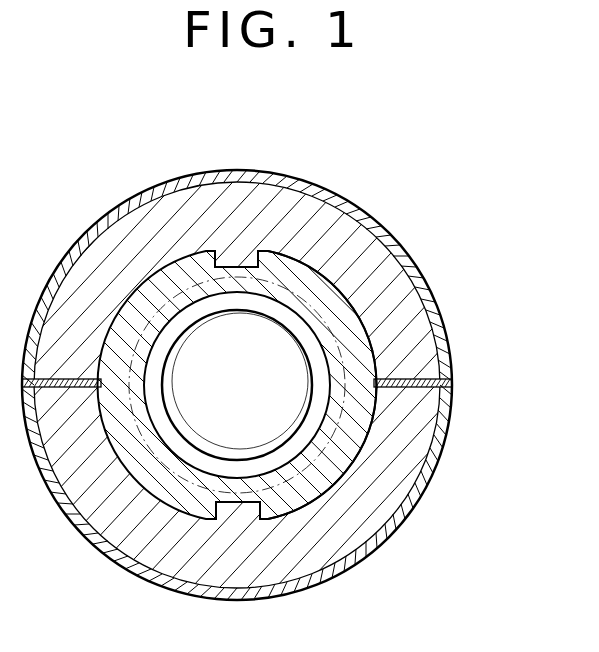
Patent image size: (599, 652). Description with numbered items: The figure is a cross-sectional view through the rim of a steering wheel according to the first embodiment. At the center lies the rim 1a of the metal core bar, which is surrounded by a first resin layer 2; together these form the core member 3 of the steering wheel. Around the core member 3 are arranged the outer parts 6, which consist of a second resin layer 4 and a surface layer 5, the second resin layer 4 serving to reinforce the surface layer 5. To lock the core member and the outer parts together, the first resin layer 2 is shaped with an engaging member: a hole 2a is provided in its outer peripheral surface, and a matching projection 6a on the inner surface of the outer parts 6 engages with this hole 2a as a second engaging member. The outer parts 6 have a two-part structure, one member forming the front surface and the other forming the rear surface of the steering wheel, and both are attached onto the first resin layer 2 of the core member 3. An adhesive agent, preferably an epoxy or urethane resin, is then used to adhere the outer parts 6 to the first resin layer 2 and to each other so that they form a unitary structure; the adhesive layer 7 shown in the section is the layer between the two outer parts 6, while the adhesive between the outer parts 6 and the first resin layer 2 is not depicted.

The rim of the metal core bar 1a is at (348, 291).
The first resin layer 2 is at (293, 321).
The hole 2a is at (257, 256).
The core member 3 is at (335, 321).
The second resin layer 4 is at (427, 458).
The surface layer 5 is at (475, 453).
The outer parts 6 is at (273, 385).
The projection 6a is at (292, 258).
The adhesive layer 7 is at (452, 383).